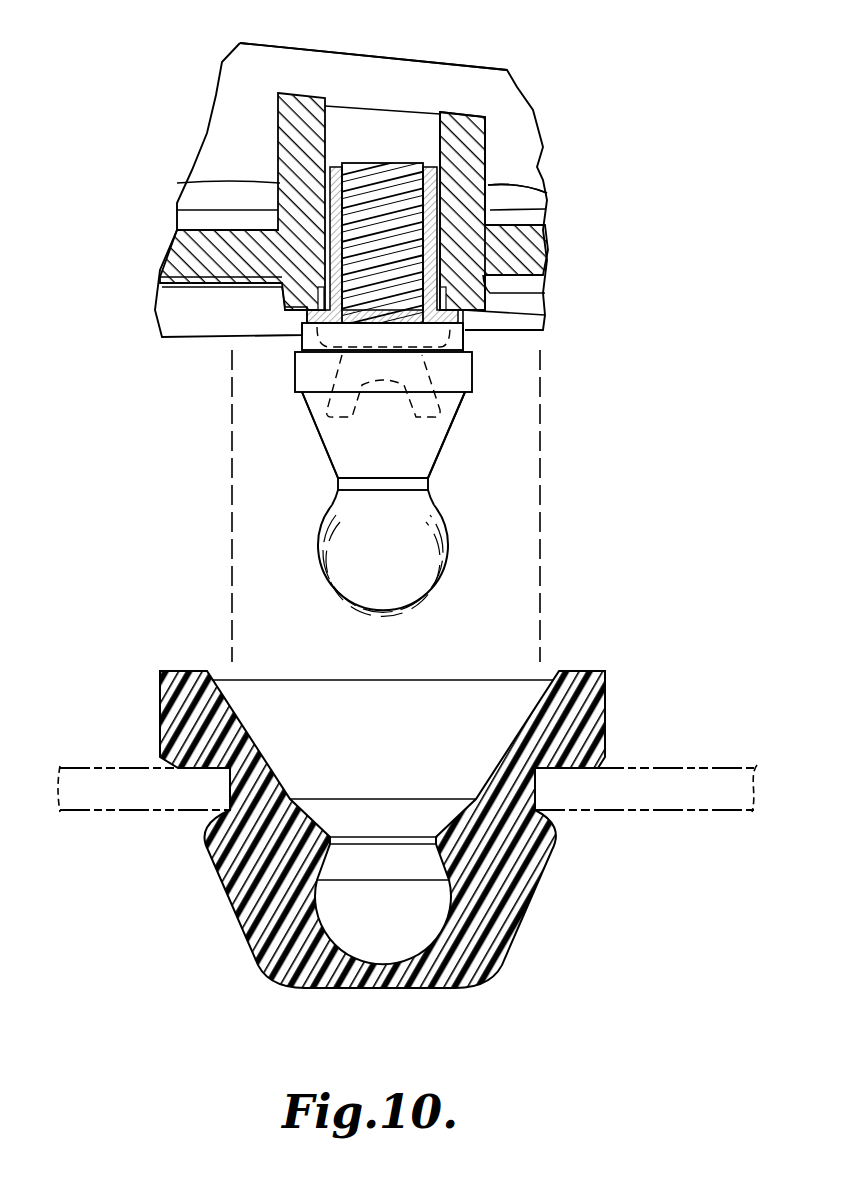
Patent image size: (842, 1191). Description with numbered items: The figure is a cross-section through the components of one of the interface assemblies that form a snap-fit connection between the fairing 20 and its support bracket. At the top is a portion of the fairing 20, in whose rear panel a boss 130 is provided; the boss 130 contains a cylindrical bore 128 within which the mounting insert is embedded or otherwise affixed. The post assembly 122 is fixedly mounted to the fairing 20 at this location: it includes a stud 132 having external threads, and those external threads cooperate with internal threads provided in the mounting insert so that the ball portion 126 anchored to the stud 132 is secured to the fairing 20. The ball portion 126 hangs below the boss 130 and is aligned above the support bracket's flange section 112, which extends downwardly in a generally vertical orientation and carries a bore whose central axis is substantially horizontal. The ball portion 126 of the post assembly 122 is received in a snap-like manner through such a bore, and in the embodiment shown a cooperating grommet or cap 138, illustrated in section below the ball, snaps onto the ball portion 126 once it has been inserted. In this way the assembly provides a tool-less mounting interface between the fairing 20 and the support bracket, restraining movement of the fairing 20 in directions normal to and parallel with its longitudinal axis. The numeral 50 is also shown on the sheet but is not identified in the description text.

The fairing 20 is at (543, 140).
The mounting structure 50 is at (472, 68).
The flange section 112 is at (683, 768).
The post assembly 122 is at (470, 428).
The ball portion 126 is at (326, 172).
The cylindrical bore 128 is at (440, 140).
The boss 130 is at (548, 192).
The stud 132 is at (343, 202).
The grommet or cap 138 is at (548, 927).